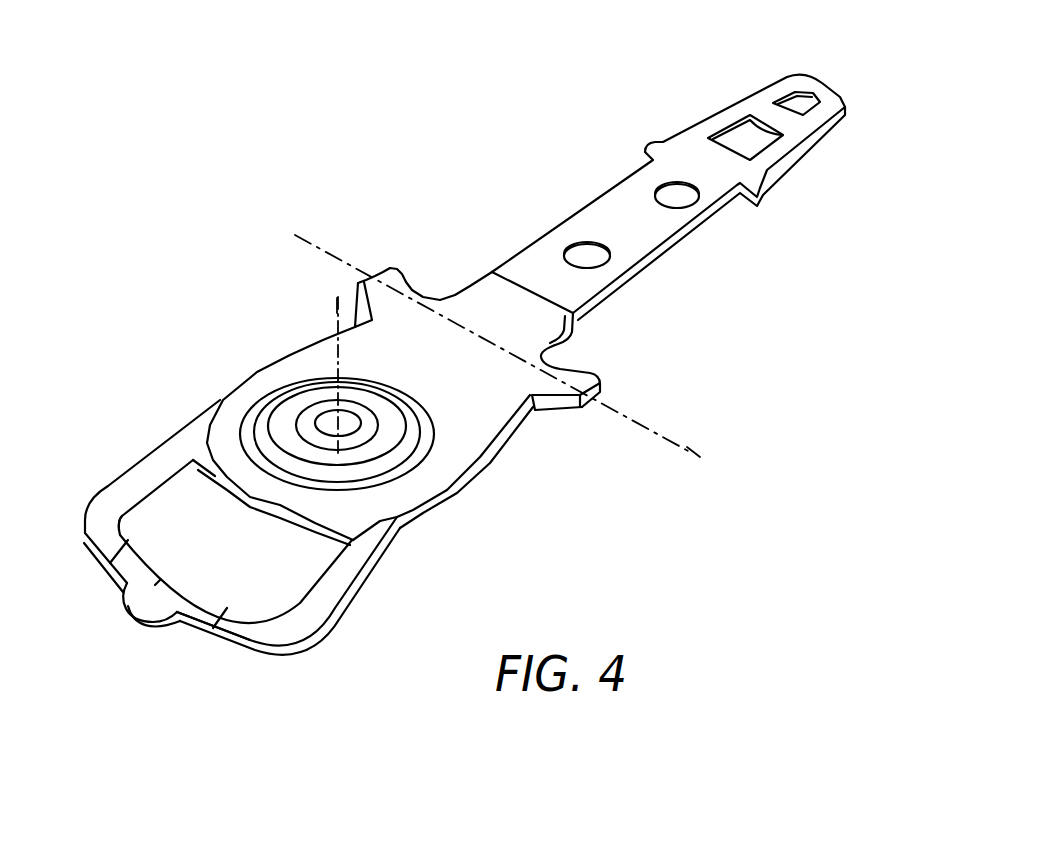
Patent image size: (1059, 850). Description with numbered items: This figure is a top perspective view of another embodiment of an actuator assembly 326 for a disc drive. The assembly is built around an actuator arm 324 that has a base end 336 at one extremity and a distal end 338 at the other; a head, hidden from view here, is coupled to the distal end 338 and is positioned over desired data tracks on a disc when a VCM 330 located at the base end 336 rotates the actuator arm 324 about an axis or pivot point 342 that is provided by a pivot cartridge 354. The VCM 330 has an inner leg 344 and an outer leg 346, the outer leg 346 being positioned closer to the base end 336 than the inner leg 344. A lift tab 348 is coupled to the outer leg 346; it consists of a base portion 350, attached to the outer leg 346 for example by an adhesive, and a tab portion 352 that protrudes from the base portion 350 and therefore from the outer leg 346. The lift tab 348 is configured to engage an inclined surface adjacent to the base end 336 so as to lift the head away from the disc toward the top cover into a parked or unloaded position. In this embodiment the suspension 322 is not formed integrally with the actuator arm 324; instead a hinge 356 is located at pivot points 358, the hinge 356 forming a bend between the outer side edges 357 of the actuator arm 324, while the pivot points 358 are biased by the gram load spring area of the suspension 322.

The actuator assembly 326 is at (333, 109).
The distal end 338 is at (853, 94).
The suspension 322 is at (608, 218).
The pivot points 358 is at (385, 272).
The outer side edges 357 is at (357, 310).
The axis or pivot point 342 is at (337, 308).
The pivot cartridge 354 is at (293, 412).
The hinge 356 is at (695, 452).
The actuator arm 324 is at (463, 427).
The outer leg 346 is at (119, 529).
The inner leg 344 is at (252, 515).
The base portion 350 is at (157, 583).
The lift tab 348 is at (120, 600).
The tab portion 352 is at (145, 613).
The base end 336 is at (224, 650).
The VCM 330 is at (350, 593).